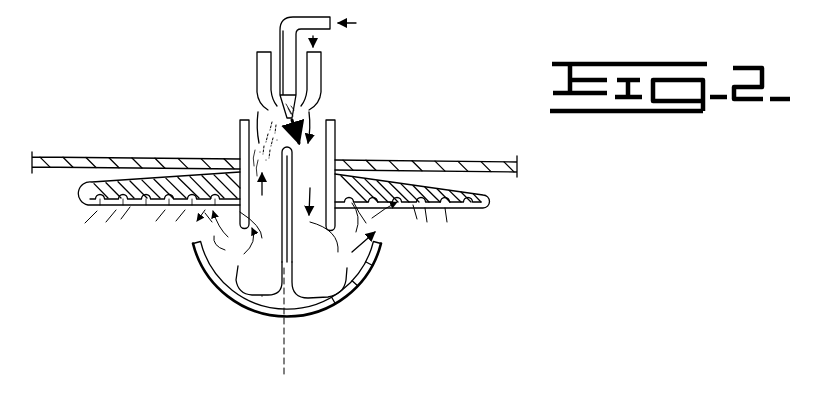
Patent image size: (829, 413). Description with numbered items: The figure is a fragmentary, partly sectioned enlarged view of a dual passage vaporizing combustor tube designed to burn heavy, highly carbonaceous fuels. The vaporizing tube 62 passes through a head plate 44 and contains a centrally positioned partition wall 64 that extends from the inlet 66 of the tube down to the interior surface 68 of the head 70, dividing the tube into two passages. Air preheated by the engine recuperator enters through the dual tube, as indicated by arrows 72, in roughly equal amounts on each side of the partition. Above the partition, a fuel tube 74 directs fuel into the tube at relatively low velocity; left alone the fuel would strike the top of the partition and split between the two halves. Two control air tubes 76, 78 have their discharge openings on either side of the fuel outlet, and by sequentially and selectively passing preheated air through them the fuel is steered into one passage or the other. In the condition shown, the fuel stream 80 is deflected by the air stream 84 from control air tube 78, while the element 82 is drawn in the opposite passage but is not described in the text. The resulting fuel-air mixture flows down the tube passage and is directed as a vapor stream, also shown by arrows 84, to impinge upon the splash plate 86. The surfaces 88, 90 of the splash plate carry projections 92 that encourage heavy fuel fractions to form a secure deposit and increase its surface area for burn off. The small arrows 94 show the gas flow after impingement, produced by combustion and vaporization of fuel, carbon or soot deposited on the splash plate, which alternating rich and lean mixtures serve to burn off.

The head plate 44 is at (99, 157).
The vaporizing tube 62 is at (231, 313).
The partition wall 64 is at (294, 235).
The inlet 66 is at (318, 133).
The interior surface 68 is at (236, 280).
The head 70 is at (264, 306).
The arrows 72 is at (250, 105).
The fuel tube 74 is at (282, 33).
The control air tube 76 is at (262, 63).
The control air tube 78 is at (313, 63).
The fuel stream 80 is at (265, 174).
The central tube 82 is at (303, 204).
The air stream 84 is at (374, 266).
The splash plate 86 is at (500, 187).
The surface 88 is at (149, 207).
The surface 90 is at (376, 235).
The projections 92 is at (126, 211).
The small arrows 94 is at (490, 231).